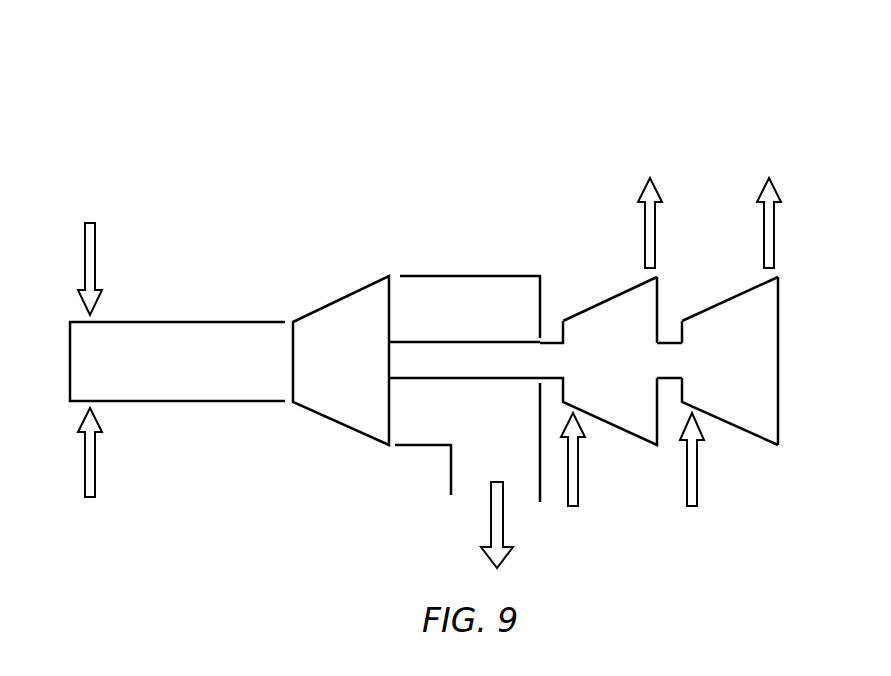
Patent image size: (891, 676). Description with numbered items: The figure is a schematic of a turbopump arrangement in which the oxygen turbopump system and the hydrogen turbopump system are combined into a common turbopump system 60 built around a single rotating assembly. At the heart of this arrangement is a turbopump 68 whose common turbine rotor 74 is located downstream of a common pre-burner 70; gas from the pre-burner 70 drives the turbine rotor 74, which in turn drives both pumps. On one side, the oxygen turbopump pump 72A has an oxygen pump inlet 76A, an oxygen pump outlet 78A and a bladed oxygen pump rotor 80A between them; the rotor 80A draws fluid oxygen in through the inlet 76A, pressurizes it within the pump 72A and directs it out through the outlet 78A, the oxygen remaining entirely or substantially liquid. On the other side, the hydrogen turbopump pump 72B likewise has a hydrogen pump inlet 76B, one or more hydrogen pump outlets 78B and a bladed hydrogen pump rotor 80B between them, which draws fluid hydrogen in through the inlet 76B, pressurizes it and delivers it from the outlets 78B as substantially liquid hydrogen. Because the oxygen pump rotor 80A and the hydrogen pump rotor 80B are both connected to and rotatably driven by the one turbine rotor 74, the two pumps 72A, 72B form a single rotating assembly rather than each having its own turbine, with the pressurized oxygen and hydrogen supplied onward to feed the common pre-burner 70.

The common turbopump system 60 is at (555, 117).
The turbopump 68 is at (358, 162).
The common pre-burner 70 is at (183, 307).
The oxygen turbopump pump 72A is at (622, 447).
The hydrogen turbopump pump 72B is at (753, 453).
The common turbine rotor 74 is at (337, 432).
The oxygen pump inlet 76A is at (570, 420).
The hydrogen pump inlet 76B is at (700, 424).
The oxygen pump outlet 78A is at (656, 277).
The hydrogen pump outlet 78B is at (778, 277).
The oxygen pump rotor 80A is at (660, 297).
The hydrogen pump rotor 80B is at (778, 412).